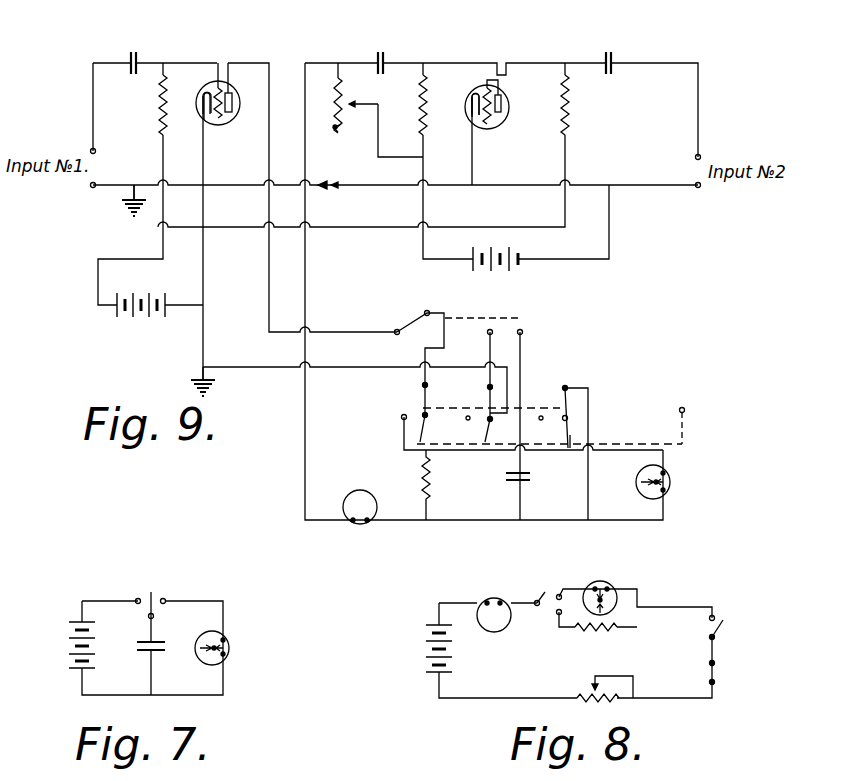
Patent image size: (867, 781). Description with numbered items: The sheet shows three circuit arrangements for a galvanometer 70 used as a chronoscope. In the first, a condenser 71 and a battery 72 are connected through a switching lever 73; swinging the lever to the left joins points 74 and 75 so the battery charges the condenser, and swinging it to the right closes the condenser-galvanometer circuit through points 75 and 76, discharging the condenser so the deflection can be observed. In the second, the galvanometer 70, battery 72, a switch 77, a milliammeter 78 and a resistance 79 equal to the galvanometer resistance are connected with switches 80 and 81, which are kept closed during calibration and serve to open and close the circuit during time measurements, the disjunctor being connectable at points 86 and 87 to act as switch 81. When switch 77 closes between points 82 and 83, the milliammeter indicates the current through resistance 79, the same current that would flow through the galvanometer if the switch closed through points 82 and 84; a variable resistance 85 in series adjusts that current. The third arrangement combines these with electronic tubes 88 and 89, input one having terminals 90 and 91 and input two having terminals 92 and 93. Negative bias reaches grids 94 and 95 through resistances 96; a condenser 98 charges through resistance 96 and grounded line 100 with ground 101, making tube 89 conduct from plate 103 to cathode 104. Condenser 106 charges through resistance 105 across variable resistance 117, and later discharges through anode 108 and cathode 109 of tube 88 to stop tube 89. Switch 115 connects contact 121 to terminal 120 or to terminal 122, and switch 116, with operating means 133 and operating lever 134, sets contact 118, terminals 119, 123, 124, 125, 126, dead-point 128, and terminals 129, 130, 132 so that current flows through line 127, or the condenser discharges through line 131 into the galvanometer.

In FIG. 9, the galvanometer 70 is at (671, 481).
In FIG. 7, the galvanometer 70 is at (229, 646).
In FIG. 8, the galvanometer 70 is at (613, 589).
In FIG. 9, the condenser 71 is at (532, 477).
In FIG. 7, the condenser 71 is at (165, 640).
In FIG. 9, the battery 72 is at (520, 264).
In FIG. 7, the battery 72 is at (72, 622).
In FIG. 8, the battery 72 is at (430, 668).
In FIG. 7, the switching lever 73 is at (153, 593).
In FIG. 7, the point 74 is at (138, 599).
In FIG. 7, the point 75 is at (149, 617).
In FIG. 7, the point 76 is at (166, 600).
In FIG. 8, the switch 77 is at (545, 592).
In FIG. 9, the milliammeter 78 is at (362, 524).
In FIG. 8, the milliammeter 78 is at (494, 598).
In FIG. 9, the resistance 79 is at (423, 475).
In FIG. 8, the resistance 79 is at (603, 632).
In FIG. 8, the switch 80 is at (724, 628).
In FIG. 8, the switch 81 is at (715, 665).
In FIG. 8, the point 82 is at (528, 619).
In FIG. 8, the point 83 is at (558, 615).
In FIG. 8, the point 84 is at (562, 592).
In FIG. 8, the variable resistance 85 is at (622, 700).
In FIG. 8, the point 86 is at (715, 684).
In FIG. 8, the point 87 is at (715, 661).
In FIG. 9, the electronic tube 88 is at (500, 93).
In FIG. 9, the electronic tube 89 is at (232, 93).
In FIG. 9, the terminal 90 is at (91, 150).
In FIG. 9, the terminal 91 is at (92, 187).
In FIG. 9, the terminal 92 is at (700, 155).
In FIG. 9, the terminal 93 is at (700, 187).
In FIG. 9, the grid 94 is at (489, 125).
In FIG. 9, the grid 95 is at (219, 118).
In FIG. 9, the resistance 96 is at (158, 98).
In FIG. 9, the condenser 98 is at (136, 57).
In FIG. 9, the line 100 is at (326, 183).
In FIG. 9, the ground 101 is at (129, 213).
In FIG. 9, the plate 103 is at (232, 109).
In FIG. 9, the cathode 104 is at (206, 114).
In FIG. 9, the resistance 105 is at (426, 118).
In FIG. 9, the condenser 106 is at (387, 60).
In FIG. 9, the anode 108 is at (502, 111).
In FIG. 9, the cathode 109 is at (475, 107).
In FIG. 9, the switch 115 is at (477, 338).
In FIG. 9, the switch 116 is at (560, 400).
In FIG. 9, the variable resistance 117 is at (337, 82).
In FIG. 9, the switch contact 118 is at (443, 428).
In FIG. 9, the terminal 119 is at (427, 385).
In FIG. 9, the terminal 120 is at (428, 312).
In FIG. 9, the contact 121 is at (396, 334).
In FIG. 9, the terminal 122 is at (522, 332).
In FIG. 9, the terminal 123 is at (567, 387).
In FIG. 9, the terminal 124 is at (567, 418).
In FIG. 9, the terminal 125 is at (492, 386).
In FIG. 9, the terminal 126 is at (507, 430).
In FIG. 9, the line 127 is at (230, 368).
In FIG. 9, the dead-point 128 is at (546, 429).
In FIG. 9, the terminal 129 is at (468, 419).
In FIG. 9, the terminal 130 is at (403, 418).
In FIG. 9, the line 131 is at (532, 520).
In FIG. 9, the terminal 132 is at (470, 375).
In FIG. 9, the operating means 133 is at (684, 409).
In FIG. 9, the operating lever 134 is at (636, 443).